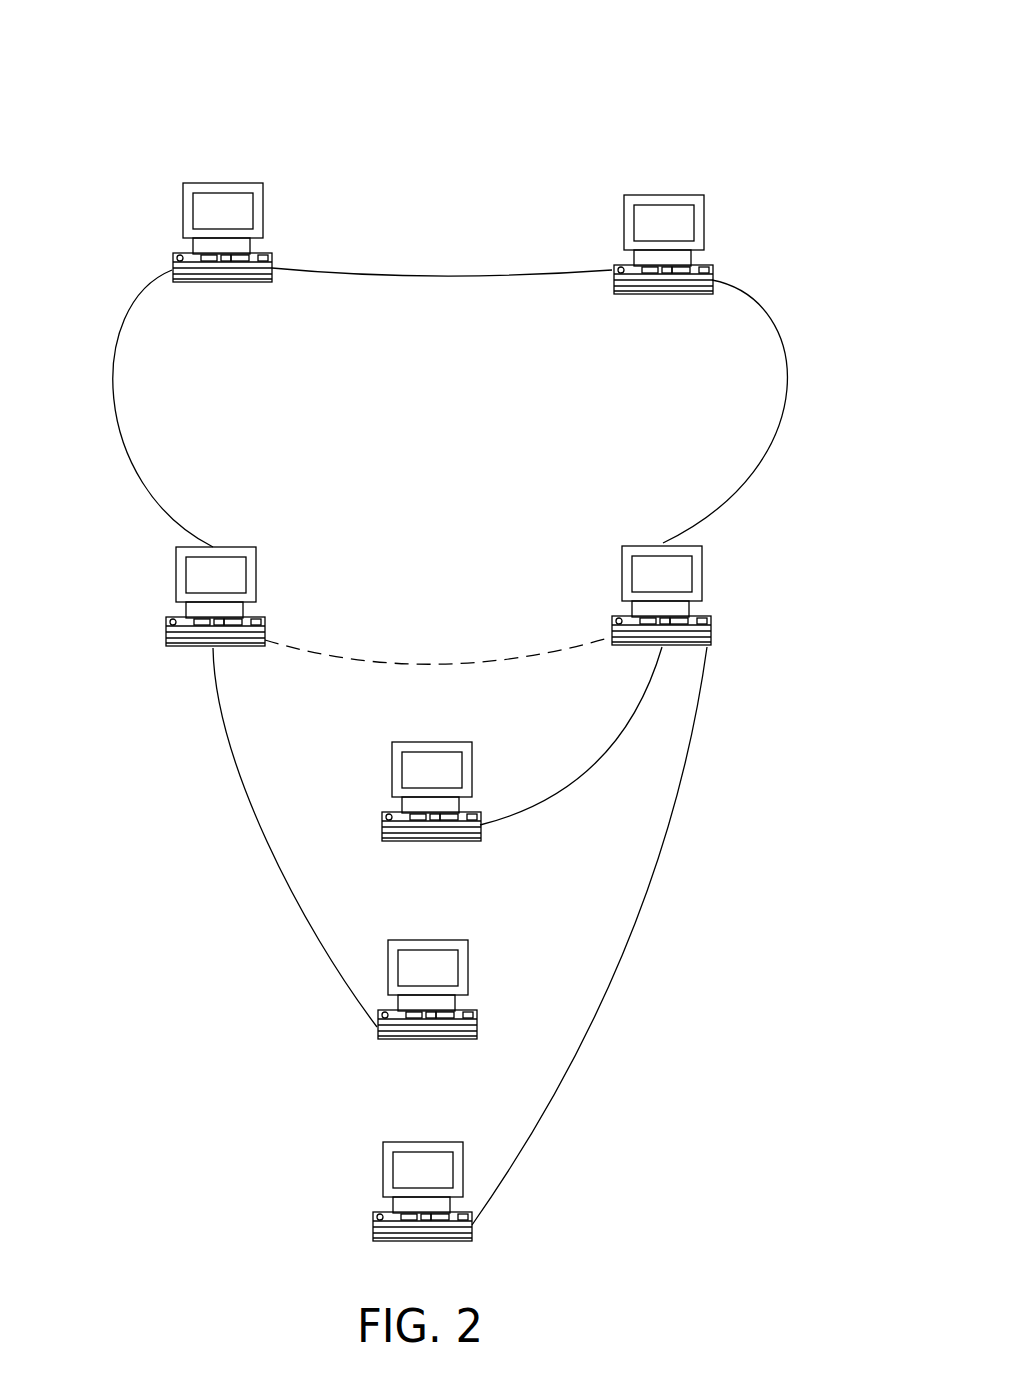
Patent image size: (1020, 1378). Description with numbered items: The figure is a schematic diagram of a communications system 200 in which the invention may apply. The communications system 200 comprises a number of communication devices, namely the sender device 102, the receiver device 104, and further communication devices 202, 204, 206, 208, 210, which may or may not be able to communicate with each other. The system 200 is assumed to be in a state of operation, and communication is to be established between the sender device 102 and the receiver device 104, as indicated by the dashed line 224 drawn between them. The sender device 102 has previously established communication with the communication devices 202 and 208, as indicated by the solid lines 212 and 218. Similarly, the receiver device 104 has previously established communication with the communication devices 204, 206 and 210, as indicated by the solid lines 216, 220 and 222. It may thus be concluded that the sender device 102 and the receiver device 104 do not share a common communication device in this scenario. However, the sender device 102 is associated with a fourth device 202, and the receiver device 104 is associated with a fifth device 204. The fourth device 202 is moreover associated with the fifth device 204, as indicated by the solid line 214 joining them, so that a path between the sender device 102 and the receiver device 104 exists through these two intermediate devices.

The communications system 200 is at (673, 108).
The sender device 102 is at (163, 628).
The receiver device 104 is at (713, 627).
The fourth device 202 is at (226, 183).
The fifth device 204 is at (657, 194).
The communication device 206 is at (380, 825).
The communication device 208 is at (478, 1017).
The communication device 210 is at (372, 1223).
The solid line 212 is at (123, 313).
The solid line 214 is at (433, 280).
The solid line 216 is at (757, 463).
The solid line 218 is at (243, 803).
The solid line 220 is at (510, 817).
The solid line 222 is at (593, 1015).
The dashed line 224 is at (430, 662).